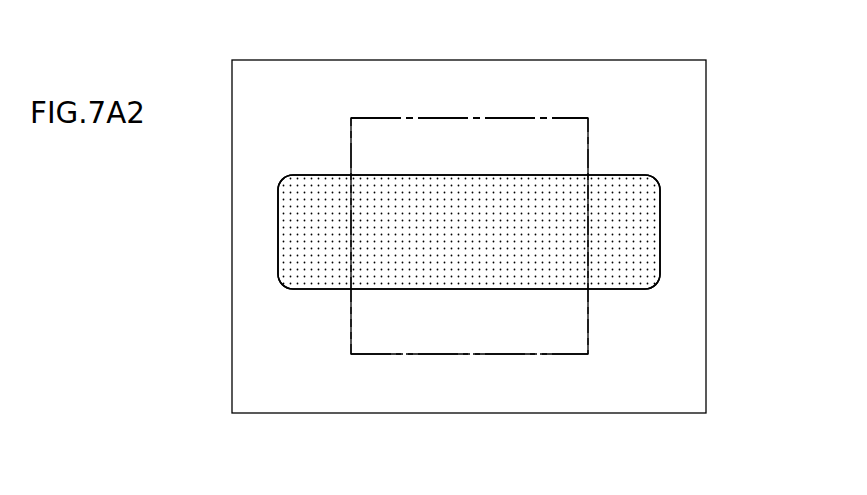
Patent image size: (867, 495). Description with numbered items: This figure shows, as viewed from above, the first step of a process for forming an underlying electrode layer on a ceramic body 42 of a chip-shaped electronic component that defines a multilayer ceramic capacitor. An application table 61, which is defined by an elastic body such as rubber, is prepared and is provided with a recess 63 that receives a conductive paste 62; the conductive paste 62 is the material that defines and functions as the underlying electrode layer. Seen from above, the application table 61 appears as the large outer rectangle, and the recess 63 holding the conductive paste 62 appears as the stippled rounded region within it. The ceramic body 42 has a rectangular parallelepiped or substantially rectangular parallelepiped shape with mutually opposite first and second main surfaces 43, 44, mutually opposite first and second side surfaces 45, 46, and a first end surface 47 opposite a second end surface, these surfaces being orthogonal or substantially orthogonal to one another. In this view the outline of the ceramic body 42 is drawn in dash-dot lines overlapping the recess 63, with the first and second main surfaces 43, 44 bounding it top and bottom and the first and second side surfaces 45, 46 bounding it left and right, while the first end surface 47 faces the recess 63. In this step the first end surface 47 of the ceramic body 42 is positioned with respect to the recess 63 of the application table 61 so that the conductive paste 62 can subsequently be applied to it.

The application table 61 is at (708, 115).
The ceramic body 42 is at (563, 115).
The first main surface 43 is at (445, 355).
The second main surface 44 is at (512, 118).
The first side surface 45 is at (351, 331).
The second side surface 46 is at (588, 330).
The first end surface 47 is at (438, 130).
The conductive paste 62 is at (648, 256).
The recess 63 is at (610, 177).